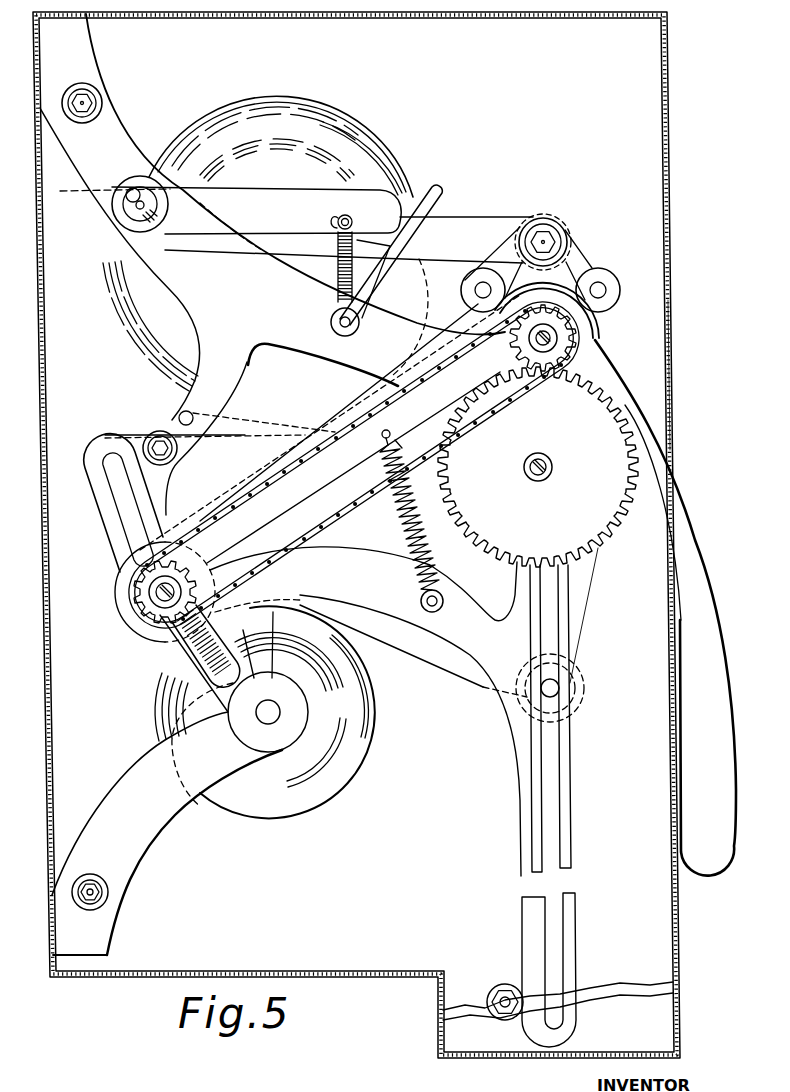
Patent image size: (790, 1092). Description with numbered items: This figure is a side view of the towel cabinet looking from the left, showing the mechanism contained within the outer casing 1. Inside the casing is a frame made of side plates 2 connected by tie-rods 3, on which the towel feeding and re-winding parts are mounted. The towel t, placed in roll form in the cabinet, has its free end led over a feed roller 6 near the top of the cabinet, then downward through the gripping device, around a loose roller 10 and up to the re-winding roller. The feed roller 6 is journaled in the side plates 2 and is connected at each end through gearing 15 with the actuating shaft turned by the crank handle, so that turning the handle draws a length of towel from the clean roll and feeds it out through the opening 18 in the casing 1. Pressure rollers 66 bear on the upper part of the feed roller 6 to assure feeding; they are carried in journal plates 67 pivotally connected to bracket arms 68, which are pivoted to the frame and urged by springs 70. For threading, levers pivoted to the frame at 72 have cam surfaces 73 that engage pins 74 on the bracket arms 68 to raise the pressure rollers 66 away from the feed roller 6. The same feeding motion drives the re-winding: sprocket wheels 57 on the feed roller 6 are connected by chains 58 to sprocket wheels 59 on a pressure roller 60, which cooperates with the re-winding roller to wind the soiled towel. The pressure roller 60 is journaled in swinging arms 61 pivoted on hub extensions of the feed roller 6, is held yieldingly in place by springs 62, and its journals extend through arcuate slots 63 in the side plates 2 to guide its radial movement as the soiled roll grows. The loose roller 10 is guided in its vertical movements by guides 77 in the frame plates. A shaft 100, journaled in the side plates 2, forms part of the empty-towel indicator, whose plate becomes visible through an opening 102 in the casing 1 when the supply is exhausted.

The outer casing 1 is at (666, 231).
The side plates 2 is at (93, 70).
The tie-rods 3 is at (93, 890).
The feed roller 6 is at (594, 336).
The loose roller 10 is at (523, 700).
The gearing 15 is at (608, 488).
The opening 18 is at (670, 444).
The sprocket wheels 57 is at (543, 337).
The chains 58 is at (328, 445).
The sprocket wheels 59 is at (142, 593).
The pressure roller 60 is at (143, 623).
The swinging arms 61 is at (231, 484).
The springs 62 is at (400, 527).
The arcuate slots 63 is at (124, 522).
The pressure rollers 66 is at (608, 268).
The journal plates 67 is at (576, 250).
The bracket arms 68 is at (485, 221).
The springs 70 is at (337, 260).
The pivot 72 is at (332, 323).
The cam surfaces 73 is at (381, 228).
The pins 74 is at (333, 224).
The guides 77 is at (550, 845).
The shaft 100 is at (179, 416).
The opening 102 is at (668, 333).
The towel t is at (292, 112).